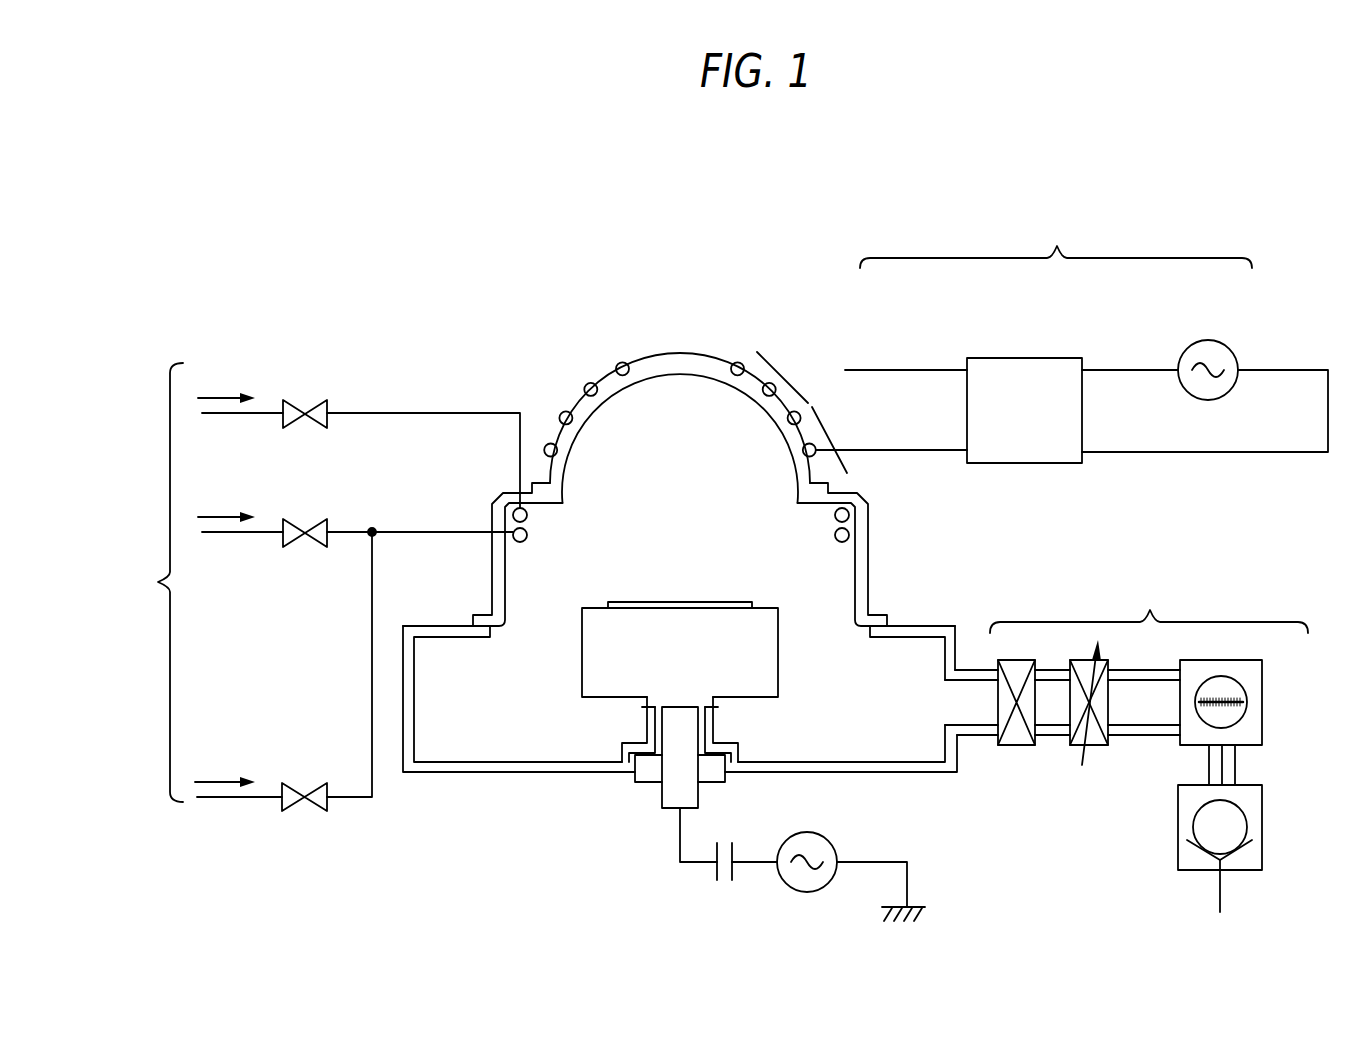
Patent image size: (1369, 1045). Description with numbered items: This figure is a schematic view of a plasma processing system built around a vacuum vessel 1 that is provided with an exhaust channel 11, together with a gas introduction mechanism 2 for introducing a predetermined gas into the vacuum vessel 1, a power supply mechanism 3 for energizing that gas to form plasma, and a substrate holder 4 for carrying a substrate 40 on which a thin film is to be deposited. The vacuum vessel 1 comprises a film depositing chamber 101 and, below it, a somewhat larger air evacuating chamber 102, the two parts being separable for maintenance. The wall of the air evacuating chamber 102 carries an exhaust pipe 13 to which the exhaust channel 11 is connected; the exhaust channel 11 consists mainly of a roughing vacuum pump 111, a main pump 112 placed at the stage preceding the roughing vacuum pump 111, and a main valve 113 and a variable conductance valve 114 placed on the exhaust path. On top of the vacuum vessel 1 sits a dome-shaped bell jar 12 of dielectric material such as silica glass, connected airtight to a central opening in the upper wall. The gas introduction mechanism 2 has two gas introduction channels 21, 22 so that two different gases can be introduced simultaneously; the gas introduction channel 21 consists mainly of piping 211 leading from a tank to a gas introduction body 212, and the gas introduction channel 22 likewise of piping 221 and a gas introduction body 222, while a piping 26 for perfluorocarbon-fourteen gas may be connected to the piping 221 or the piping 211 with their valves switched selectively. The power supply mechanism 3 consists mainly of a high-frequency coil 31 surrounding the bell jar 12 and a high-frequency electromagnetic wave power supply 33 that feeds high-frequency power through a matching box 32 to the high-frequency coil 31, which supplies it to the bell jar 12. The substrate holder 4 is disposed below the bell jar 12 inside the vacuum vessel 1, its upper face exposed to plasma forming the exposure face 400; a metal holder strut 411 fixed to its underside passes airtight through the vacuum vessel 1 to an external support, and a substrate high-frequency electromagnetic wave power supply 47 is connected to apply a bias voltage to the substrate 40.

The vacuum vessel 1 is at (680, 593).
The film depositing chamber 101 is at (522, 568).
The air evacuating chamber 102 is at (873, 755).
The bell jar 12 is at (682, 360).
The gas introduction body 212 is at (527, 515).
The gas introduction body 222 is at (526, 539).
The gas introduction mechanism 2 is at (326, 570).
The gas introduction channel 21 is at (315, 386).
The gas introduction channel 22 is at (262, 542).
The piping 211 is at (445, 413).
The piping 221 is at (445, 530).
The piping 26 is at (372, 668).
The power supply mechanism 3 is at (1042, 341).
The high-frequency coil 31 is at (812, 403).
The matching box 32 is at (1040, 358).
The high-frequency electromagnetic wave power supply 33 is at (1213, 340).
The substrate holder 4 is at (771, 717).
The substrate 40 is at (752, 603).
The exposure face 400 is at (600, 604).
The holder strut 411 is at (670, 790).
The substrate high-frequency electromagnetic wave power supply 47 is at (795, 893).
The exhaust pipe 13 is at (968, 735).
The exhaust channel 11 is at (1177, 744).
The roughing vacuum pump 111 is at (1263, 827).
The main pump 112 is at (1263, 702).
The main valve 113 is at (1018, 747).
The variable conductance valve 114 is at (1100, 747).